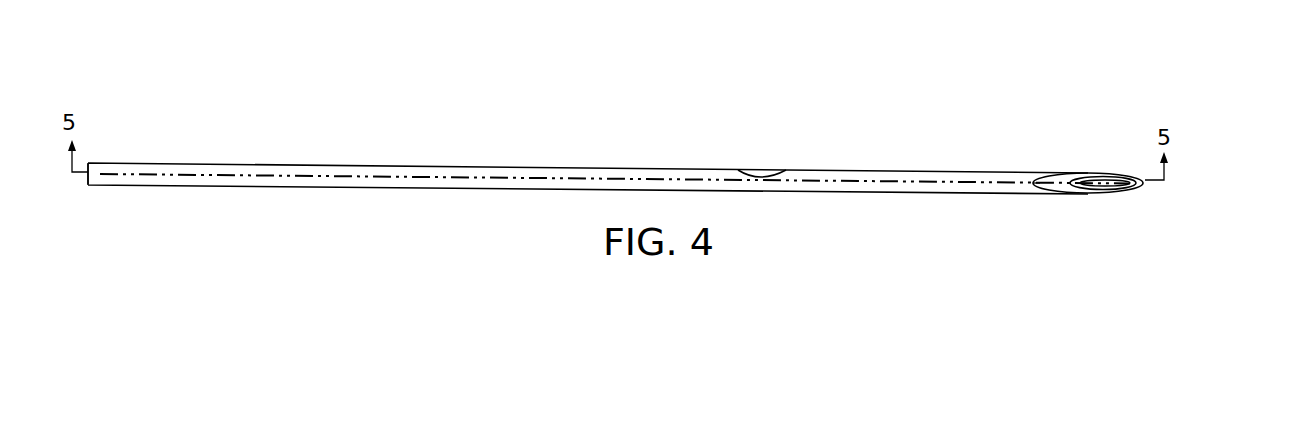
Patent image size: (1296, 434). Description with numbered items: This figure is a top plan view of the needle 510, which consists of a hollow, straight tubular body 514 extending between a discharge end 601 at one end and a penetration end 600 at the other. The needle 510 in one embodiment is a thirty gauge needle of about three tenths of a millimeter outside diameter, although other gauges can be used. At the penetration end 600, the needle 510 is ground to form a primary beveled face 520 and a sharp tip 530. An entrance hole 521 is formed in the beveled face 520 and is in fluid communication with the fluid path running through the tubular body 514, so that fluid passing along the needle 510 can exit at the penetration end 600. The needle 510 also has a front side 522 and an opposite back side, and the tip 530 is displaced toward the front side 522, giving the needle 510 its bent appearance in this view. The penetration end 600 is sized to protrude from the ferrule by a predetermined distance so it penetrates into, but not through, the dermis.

The needle 510 is at (386, 162).
The tubular body 514 is at (605, 168).
The front side 522 is at (768, 177).
The discharge end 601 is at (88, 166).
The primary beveled face 520 is at (1138, 186).
The entrance hole 521 is at (1103, 180).
The tip 530 is at (1145, 181).
The penetration end 600 is at (1103, 195).